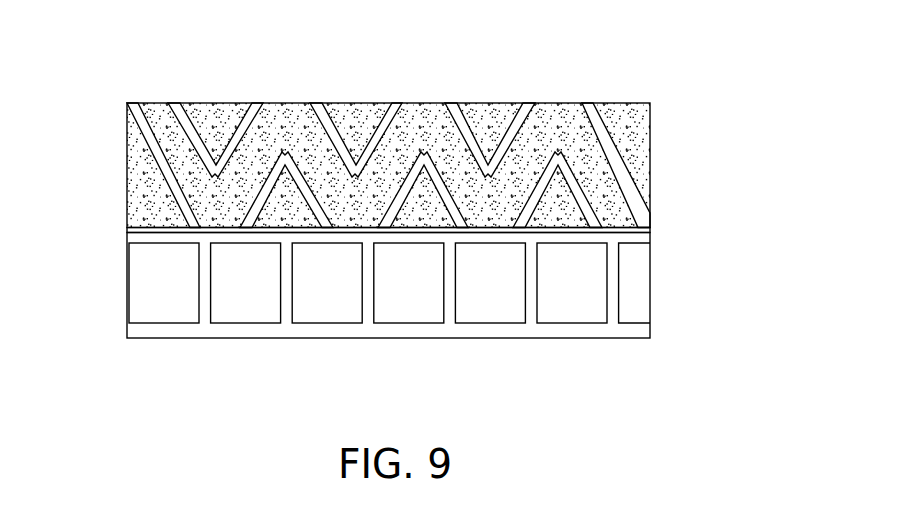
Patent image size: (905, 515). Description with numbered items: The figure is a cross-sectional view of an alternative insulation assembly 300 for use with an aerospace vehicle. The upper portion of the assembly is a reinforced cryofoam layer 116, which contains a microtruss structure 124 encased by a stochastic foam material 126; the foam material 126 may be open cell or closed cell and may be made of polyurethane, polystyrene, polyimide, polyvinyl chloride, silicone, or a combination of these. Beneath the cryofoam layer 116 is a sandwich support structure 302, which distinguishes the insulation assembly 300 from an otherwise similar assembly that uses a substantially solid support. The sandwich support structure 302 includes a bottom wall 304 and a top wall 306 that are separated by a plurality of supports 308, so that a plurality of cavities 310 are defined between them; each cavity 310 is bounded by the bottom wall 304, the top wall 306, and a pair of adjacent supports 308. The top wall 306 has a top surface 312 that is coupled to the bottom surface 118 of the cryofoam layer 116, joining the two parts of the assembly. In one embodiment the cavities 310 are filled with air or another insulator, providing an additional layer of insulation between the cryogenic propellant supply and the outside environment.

The insulation assembly 300 is at (377, 201).
The reinforced cryofoam layer 116 is at (437, 130).
The microtruss structure 124 is at (597, 97).
The stochastic foam material 126 is at (643, 167).
The bottom surface 118 is at (648, 236).
The top surface 312 is at (150, 232).
The top wall 306 is at (172, 237).
The sandwich support structure 302 is at (372, 307).
The bottom wall 304 is at (147, 331).
The supports 308 is at (281, 278).
The cavities 310 is at (324, 294).